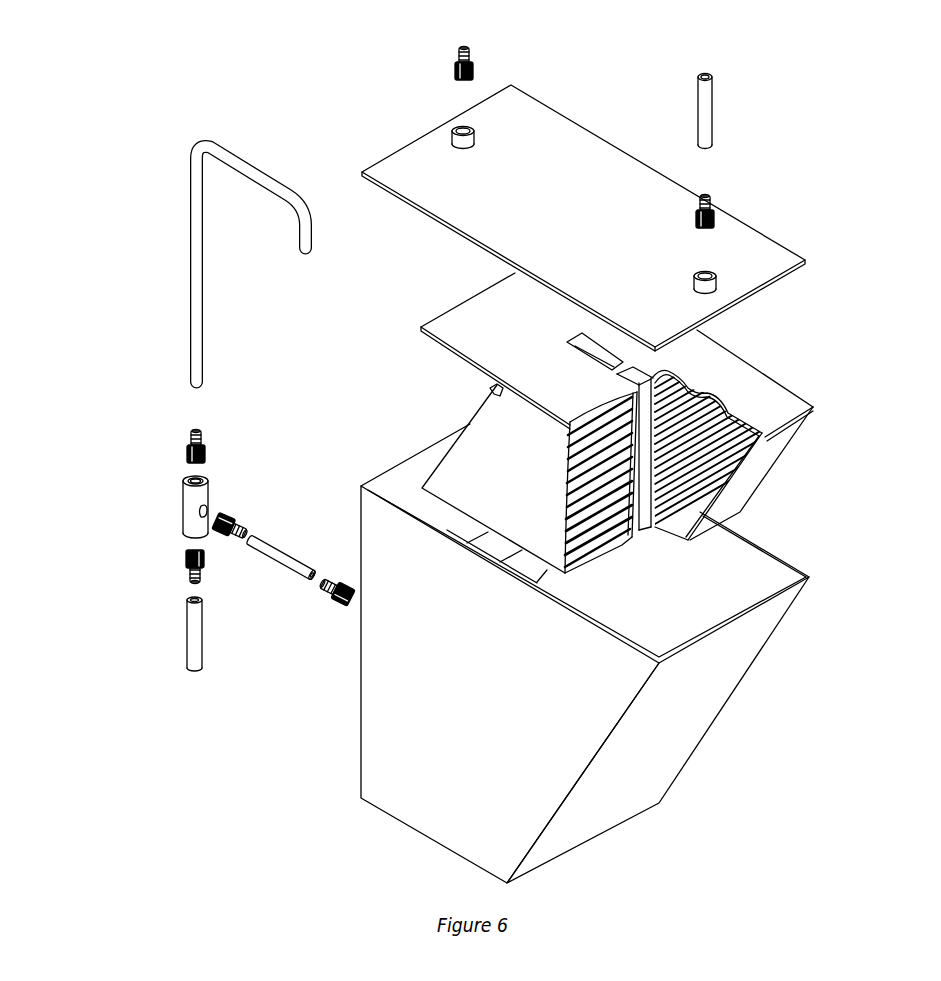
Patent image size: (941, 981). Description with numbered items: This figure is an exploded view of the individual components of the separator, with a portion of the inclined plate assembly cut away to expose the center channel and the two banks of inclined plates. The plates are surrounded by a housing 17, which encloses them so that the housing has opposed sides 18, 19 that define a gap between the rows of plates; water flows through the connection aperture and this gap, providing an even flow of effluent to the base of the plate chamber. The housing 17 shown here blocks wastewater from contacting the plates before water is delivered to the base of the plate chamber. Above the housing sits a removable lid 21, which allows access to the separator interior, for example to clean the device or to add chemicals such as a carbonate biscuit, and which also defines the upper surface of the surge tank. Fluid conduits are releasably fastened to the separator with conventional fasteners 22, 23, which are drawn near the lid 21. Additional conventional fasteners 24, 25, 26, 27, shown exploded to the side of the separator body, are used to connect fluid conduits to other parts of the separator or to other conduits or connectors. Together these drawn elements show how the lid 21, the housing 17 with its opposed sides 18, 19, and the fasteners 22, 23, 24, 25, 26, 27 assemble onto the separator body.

The housing 17 is at (772, 402).
The opposed side of housing 18 is at (707, 395).
The opposed side of housing 19 is at (650, 455).
The removable lid 21 is at (733, 242).
The fastener 22 is at (469, 51).
The fastener 23 is at (711, 194).
The fastener 24 is at (186, 447).
The fastener 25 is at (185, 567).
The fastener 26 is at (225, 537).
The fastener 27 is at (338, 603).